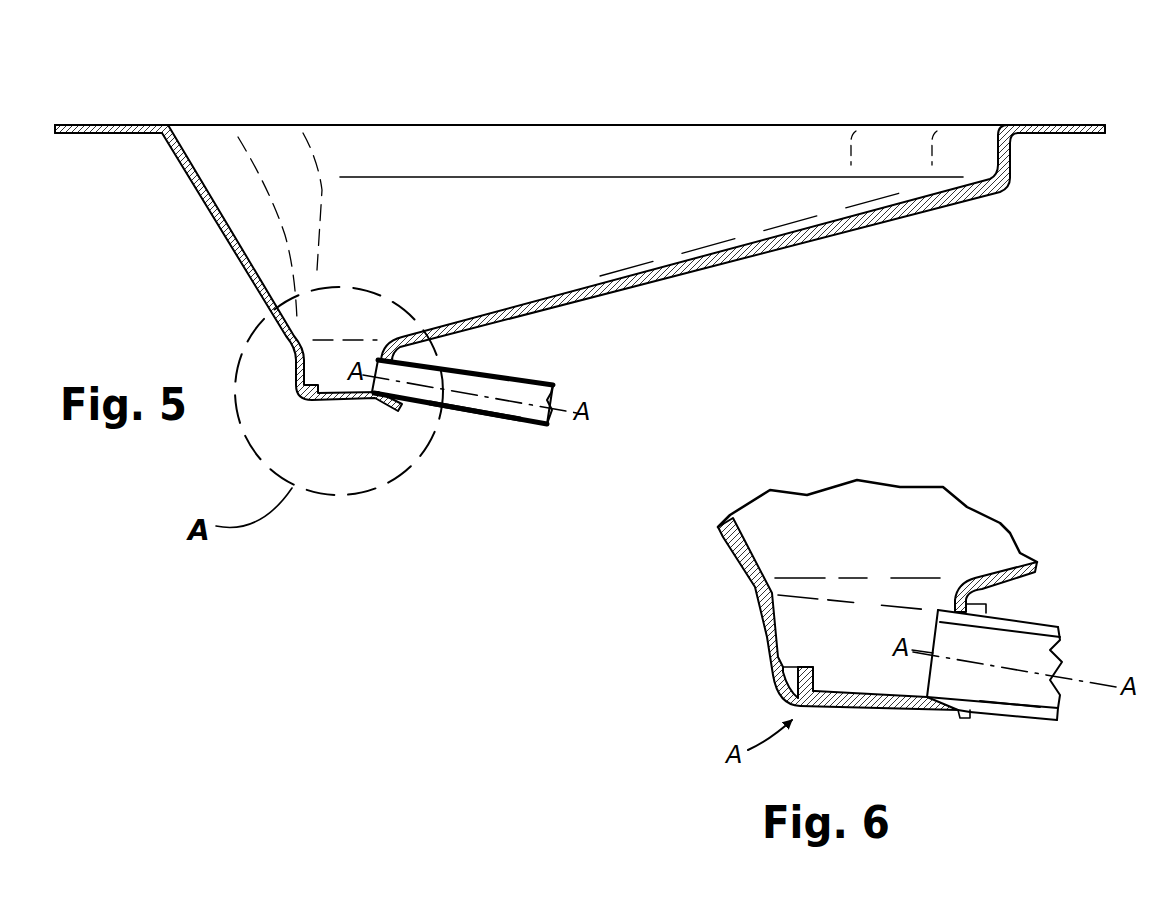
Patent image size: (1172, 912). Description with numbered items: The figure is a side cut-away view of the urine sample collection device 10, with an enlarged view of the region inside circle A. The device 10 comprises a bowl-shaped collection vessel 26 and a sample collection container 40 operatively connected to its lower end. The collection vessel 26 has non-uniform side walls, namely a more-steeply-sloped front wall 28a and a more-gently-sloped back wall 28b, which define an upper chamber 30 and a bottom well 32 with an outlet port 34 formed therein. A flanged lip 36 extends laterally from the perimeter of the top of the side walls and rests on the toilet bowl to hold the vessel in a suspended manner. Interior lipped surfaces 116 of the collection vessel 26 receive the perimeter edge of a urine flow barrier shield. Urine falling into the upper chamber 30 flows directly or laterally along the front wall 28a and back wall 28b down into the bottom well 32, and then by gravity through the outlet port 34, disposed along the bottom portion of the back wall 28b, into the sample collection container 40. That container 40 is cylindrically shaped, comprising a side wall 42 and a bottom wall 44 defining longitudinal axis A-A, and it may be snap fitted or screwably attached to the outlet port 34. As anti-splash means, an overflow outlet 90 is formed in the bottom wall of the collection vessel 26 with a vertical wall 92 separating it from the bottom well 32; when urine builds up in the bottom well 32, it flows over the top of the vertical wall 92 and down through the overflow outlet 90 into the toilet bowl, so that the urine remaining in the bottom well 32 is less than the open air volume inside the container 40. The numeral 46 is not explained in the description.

In FIG. 5, the urine sample collection device 10 is at (765, 52).
In FIG. 5, the collection vessel 26 is at (140, 125).
In FIG. 5, the more-steeply-sloped front wall 28a is at (227, 242).
In FIG. 6, the more-steeply-sloped front wall 28a is at (758, 607).
In FIG. 5, the more-gently-sloped back wall 28b is at (733, 262).
In FIG. 6, the more-gently-sloped back wall 28b is at (1013, 580).
In FIG. 5, the upper chamber 30 is at (452, 229).
In FIG. 6, the upper chamber 30 is at (896, 536).
In FIG. 5, the bottom well 32 is at (340, 372).
In FIG. 6, the bottom well 32 is at (842, 638).
In FIG. 5, the outlet port 34 is at (405, 352).
In FIG. 6, the outlet port 34 is at (983, 607).
In FIG. 5, the flanged lip 36 is at (107, 135).
In FIG. 5, the sample collection container 40 is at (503, 408).
In FIG. 6, the sample collection container 40 is at (1038, 715).
In FIG. 5, the side wall 42 is at (460, 414).
In FIG. 6, the side wall 42 is at (1005, 707).
In FIG. 5, the bottom wall 44 is at (552, 398).
In FIG. 6, the weld joint 46 is at (965, 718).
In FIG. 6, the overflow outlet 90 is at (792, 680).
In FIG. 6, the vertical wall 92 is at (813, 668).
In FIG. 5, the interior lipped surfaces 116 is at (205, 185).